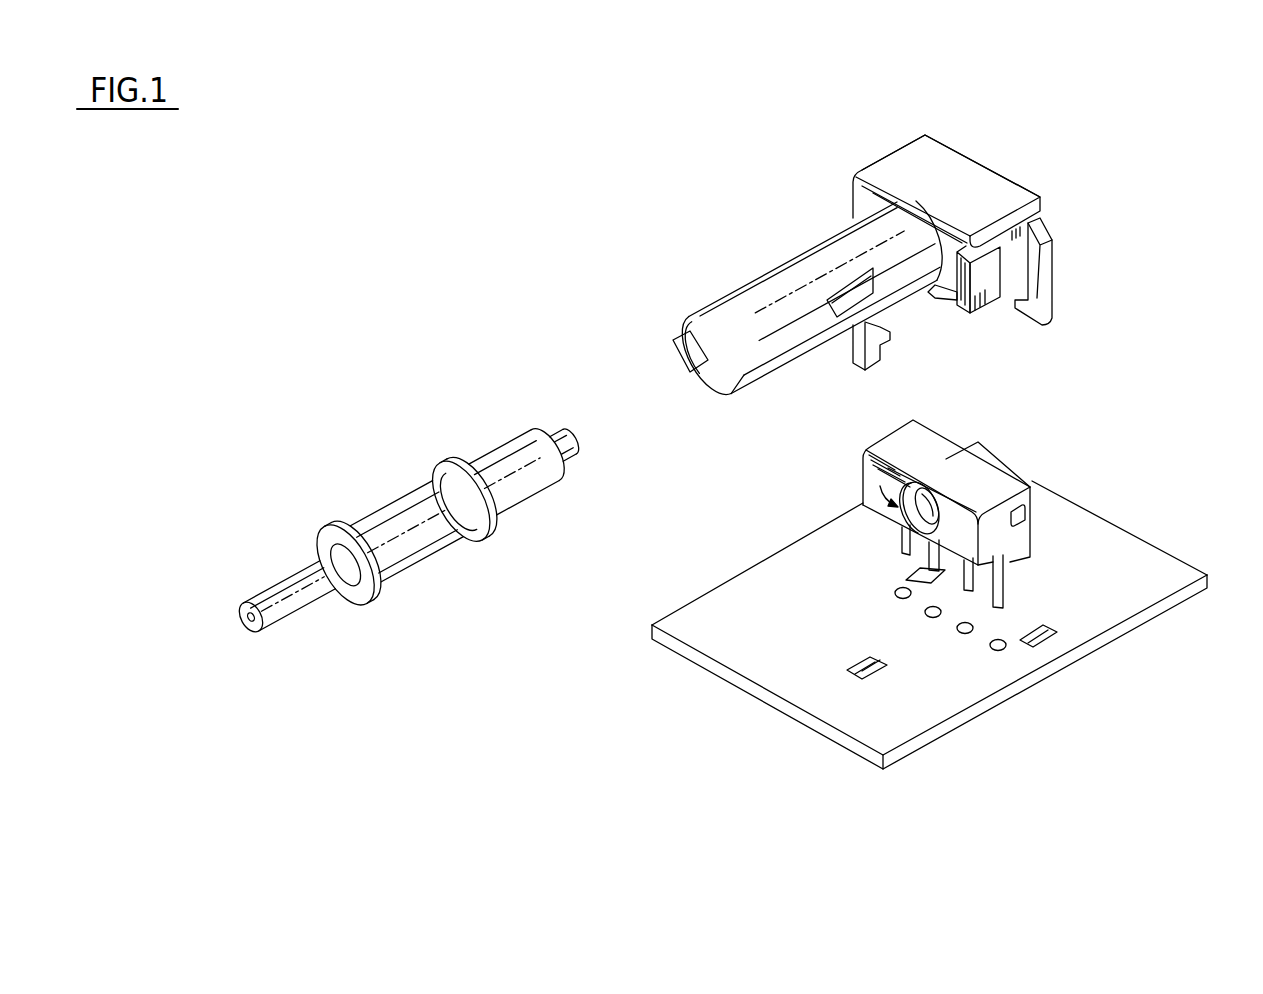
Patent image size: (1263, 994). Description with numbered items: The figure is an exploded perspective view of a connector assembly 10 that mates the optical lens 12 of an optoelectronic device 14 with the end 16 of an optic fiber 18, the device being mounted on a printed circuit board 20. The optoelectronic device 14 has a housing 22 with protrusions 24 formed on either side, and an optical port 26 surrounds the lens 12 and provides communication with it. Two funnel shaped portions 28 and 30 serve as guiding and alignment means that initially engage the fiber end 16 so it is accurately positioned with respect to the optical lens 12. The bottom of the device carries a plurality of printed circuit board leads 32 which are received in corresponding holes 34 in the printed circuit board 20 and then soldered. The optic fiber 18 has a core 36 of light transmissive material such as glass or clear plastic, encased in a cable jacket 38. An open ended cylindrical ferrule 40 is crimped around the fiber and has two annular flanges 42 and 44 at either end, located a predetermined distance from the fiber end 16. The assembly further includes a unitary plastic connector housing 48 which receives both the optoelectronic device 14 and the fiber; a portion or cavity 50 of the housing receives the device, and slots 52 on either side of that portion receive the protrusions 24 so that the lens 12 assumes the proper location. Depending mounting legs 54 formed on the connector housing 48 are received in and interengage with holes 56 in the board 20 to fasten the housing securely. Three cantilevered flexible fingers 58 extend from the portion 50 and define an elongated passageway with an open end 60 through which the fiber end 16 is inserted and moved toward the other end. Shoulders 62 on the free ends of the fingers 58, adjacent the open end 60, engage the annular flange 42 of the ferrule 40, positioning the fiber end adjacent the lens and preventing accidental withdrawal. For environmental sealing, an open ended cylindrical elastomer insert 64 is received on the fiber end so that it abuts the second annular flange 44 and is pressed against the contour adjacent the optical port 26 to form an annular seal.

The connector assembly 10 is at (535, 262).
The optical lens 12 is at (940, 503).
The optoelectronic device 14 is at (942, 541).
The end of optic fiber 16 is at (571, 428).
The optic fiber 18 is at (269, 634).
The printed circuit board 20 is at (1183, 572).
The housing 22 is at (865, 468).
The protrusions 24 is at (1035, 510).
The optical port 26 is at (933, 497).
The funnel shaped portion 28 is at (1024, 510).
The funnel shaped portion 30 is at (905, 528).
The printed circuit board leads 32 is at (903, 557).
The holes 34 is at (1062, 315).
The core 36 is at (253, 623).
The cable jacket 38 is at (296, 598).
The ferrule 40 is at (412, 555).
The annular flange 42 is at (326, 523).
The annular flange 44 is at (455, 461).
The connector housing 48 is at (880, 153).
The portion or cavity 50 is at (980, 190).
The slots 52 is at (990, 290).
The mounting legs 54 is at (893, 348).
The holes 56 is at (907, 573).
The cantilevered flexible fingers 58 is at (742, 302).
The open end 60 is at (714, 382).
The shoulders 62 is at (752, 330).
The elastomer insert 64 is at (531, 503).